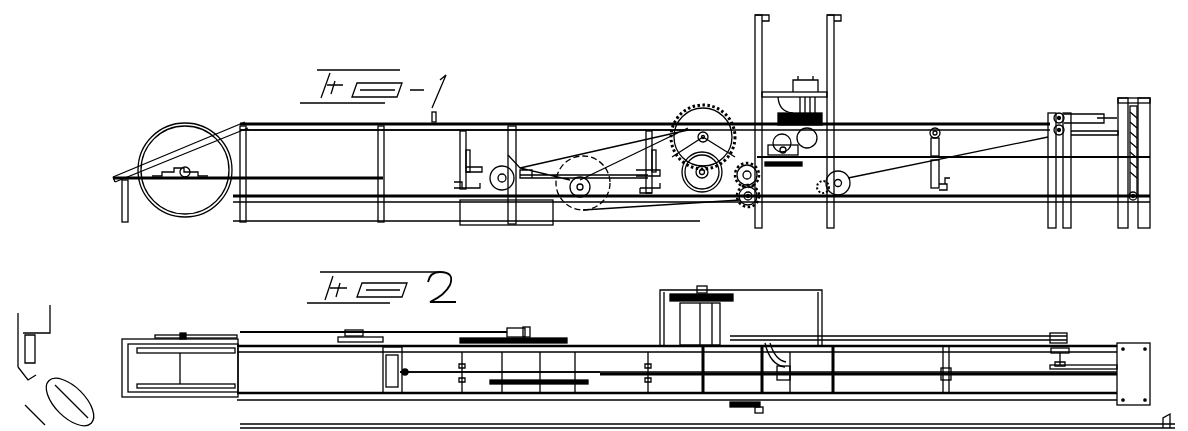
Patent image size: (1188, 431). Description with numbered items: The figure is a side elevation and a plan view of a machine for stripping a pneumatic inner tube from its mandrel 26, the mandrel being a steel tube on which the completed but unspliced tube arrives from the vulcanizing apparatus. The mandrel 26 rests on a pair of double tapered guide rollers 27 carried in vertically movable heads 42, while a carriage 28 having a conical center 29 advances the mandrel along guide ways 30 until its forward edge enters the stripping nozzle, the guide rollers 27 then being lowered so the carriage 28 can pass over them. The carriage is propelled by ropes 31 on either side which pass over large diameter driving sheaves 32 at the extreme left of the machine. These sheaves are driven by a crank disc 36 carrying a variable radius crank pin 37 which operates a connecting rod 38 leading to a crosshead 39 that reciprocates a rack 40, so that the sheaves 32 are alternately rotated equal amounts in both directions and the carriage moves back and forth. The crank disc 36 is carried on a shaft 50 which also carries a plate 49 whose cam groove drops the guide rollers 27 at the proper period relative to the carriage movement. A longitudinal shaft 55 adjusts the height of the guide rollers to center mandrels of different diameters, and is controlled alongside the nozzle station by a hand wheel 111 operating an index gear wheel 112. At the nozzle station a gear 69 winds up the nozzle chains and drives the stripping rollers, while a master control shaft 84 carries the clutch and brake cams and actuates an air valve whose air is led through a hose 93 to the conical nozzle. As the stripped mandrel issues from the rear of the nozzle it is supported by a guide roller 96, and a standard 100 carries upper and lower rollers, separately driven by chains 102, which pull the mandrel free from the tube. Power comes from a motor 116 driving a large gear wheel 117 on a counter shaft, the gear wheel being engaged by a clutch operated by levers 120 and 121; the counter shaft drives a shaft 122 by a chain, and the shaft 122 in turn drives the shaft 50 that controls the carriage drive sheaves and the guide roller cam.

In FIG. 1, the mandrel 26 is at (487, 122).
In FIG. 2, the mandrel 26 is at (612, 374).
In FIG. 2, the double tapered guide rollers 27 is at (466, 385).
In FIG. 1, the carriage 28 is at (437, 115).
In FIG. 2, the carriage 28 is at (383, 372).
In FIG. 2, the conical center 29 is at (404, 378).
In FIG. 1, the guide ways 30 is at (329, 126).
In FIG. 1, the ropes 31 is at (228, 98).
In FIG. 2, the ropes 31 is at (312, 356).
In FIG. 1, the driving sheaves 32 is at (160, 137).
In FIG. 2, the driving sheaves 32 is at (162, 352).
In FIG. 2, the crank disc 36 is at (553, 340).
In FIG. 2, the crank pin 37 is at (525, 329).
In FIG. 2, the connecting rod 38 is at (425, 333).
In FIG. 2, the crosshead 39 is at (345, 332).
In FIG. 2, the rack 40 is at (170, 335).
In FIG. 1, the heads 42 is at (460, 137).
In FIG. 1, the plate 49 is at (510, 157).
In FIG. 1, the shaft 50 is at (497, 167).
In FIG. 1, the longitudinal shaft 55 is at (903, 205).
In FIG. 2, the longitudinal shaft 55 is at (980, 378).
In FIG. 1, the gear 69 is at (818, 148).
In FIG. 1, the master control shaft 84 is at (846, 181).
In FIG. 2, the hose 93 is at (782, 345).
In FIG. 1, the guide roller 96 is at (938, 127).
In FIG. 2, the guide roller 96 is at (942, 378).
In FIG. 1, the standard 100 is at (1148, 140).
In FIG. 2, the standard 100 is at (1130, 357).
In FIG. 1, the chains 102 is at (1087, 120).
In FIG. 2, the chains 102 is at (1088, 365).
In FIG. 1, the hand wheel 111 is at (750, 208).
In FIG. 2, the hand wheel 111 is at (758, 413).
In FIG. 1, the index gear wheel 112 is at (758, 170).
In FIG. 2, the index gear wheel 112 is at (760, 405).
In FIG. 1, the motor 116 is at (702, 190).
In FIG. 2, the motor 116 is at (688, 318).
In FIG. 1, the gear wheel 117 is at (700, 110).
In FIG. 2, the gear wheel 117 is at (680, 297).
In FIG. 2, the lever 120 is at (761, 293).
In FIG. 2, the lever 121 is at (822, 330).
In FIG. 1, the shaft 122 is at (583, 197).